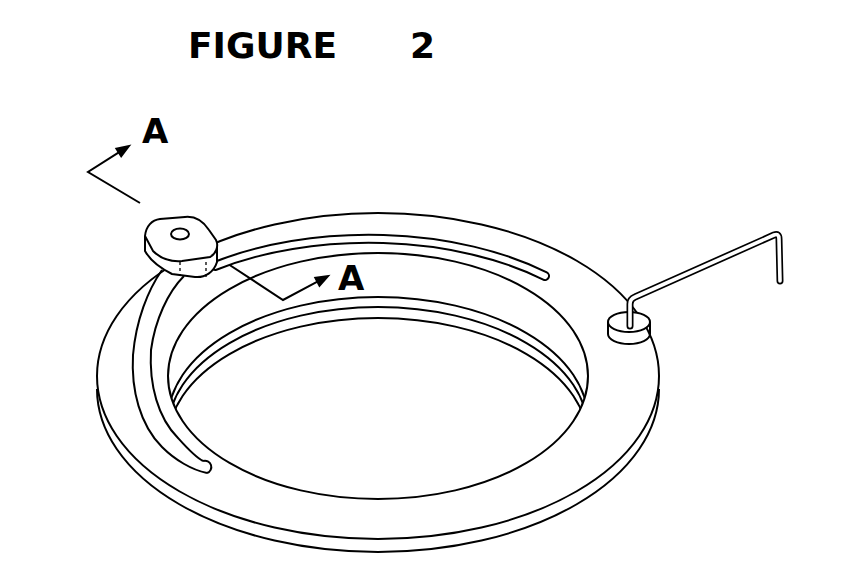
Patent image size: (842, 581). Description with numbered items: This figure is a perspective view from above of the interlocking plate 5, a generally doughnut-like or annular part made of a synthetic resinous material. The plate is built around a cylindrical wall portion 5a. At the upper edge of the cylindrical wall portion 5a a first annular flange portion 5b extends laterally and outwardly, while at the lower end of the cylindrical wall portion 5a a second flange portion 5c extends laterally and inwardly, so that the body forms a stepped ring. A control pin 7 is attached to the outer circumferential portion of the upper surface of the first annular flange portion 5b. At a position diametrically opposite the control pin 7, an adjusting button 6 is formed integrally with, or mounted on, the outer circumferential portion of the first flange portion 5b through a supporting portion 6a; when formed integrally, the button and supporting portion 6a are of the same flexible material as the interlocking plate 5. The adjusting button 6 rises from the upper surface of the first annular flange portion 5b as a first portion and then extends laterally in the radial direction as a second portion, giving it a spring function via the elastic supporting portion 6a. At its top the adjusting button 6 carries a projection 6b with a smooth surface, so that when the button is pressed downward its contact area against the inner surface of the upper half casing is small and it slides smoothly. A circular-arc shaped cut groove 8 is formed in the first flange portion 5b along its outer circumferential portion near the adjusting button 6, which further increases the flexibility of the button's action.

The interlocking plate 5 is at (596, 494).
The cylindrical wall portion 5a is at (490, 296).
The first annular flange portion 5b is at (393, 219).
The second flange portion 5c is at (363, 322).
The adjusting button 6 is at (200, 238).
The supporting portion 6a is at (155, 283).
The projection 6b is at (186, 228).
The control pin 7 is at (708, 266).
The cut groove 8 is at (503, 248).